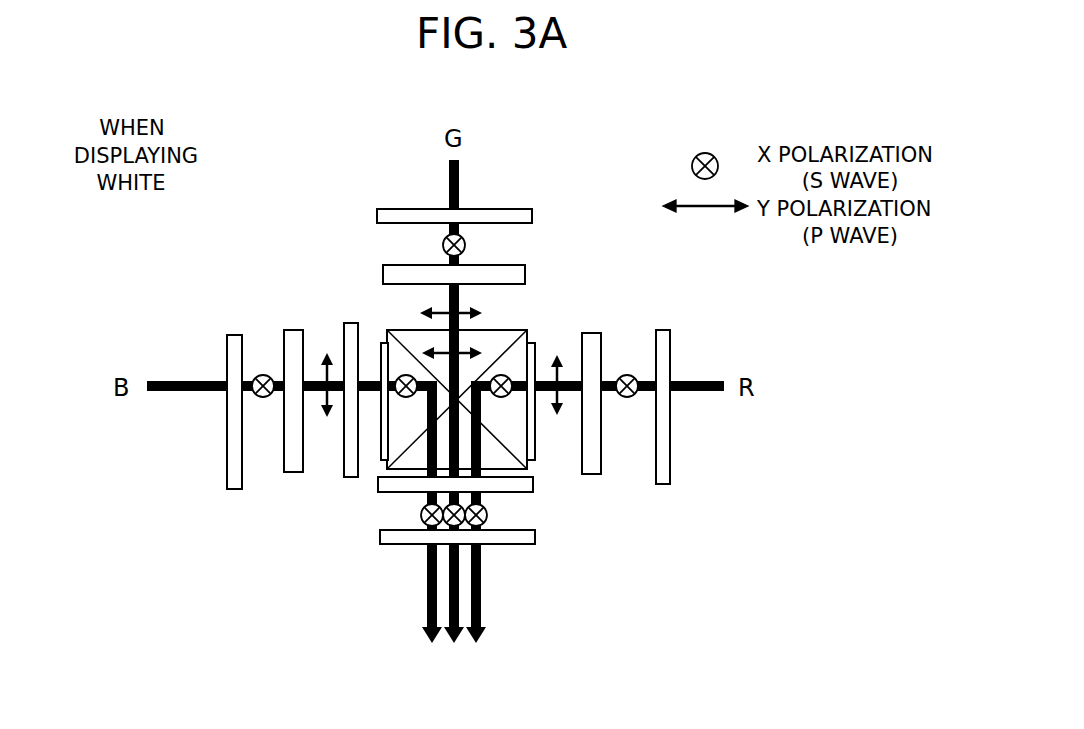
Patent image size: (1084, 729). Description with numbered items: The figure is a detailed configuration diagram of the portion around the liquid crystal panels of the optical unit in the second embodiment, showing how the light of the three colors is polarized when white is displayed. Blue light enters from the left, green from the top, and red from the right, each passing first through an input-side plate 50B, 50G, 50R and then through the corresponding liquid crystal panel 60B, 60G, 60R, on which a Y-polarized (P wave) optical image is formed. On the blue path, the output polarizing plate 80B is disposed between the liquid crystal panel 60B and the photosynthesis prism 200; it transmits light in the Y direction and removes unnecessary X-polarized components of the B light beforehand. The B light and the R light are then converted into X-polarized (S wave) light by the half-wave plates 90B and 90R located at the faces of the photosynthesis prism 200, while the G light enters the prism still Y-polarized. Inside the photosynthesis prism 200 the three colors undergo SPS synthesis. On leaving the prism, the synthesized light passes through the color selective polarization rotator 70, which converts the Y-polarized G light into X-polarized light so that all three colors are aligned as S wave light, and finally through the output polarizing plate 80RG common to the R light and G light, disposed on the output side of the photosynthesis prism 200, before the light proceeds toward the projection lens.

The photosynthesis prism 200 is at (500, 342).
The green polarization plate 50G is at (377, 216).
The liquid crystal panel 60G is at (383, 275).
The blue polarization plate 50B is at (227, 445).
The liquid crystal panel 60B is at (284, 436).
The output polarizing plate 80B is at (344, 430).
The λ/2 wave plate 90B is at (381, 443).
The λ/2 wave plate 90R is at (535, 442).
The liquid crystal panel 60R is at (601, 458).
The red polarization plate 50R is at (670, 470).
The color selective polarization rotator 70 is at (533, 488).
The output polarizing plate 80RG is at (514, 544).